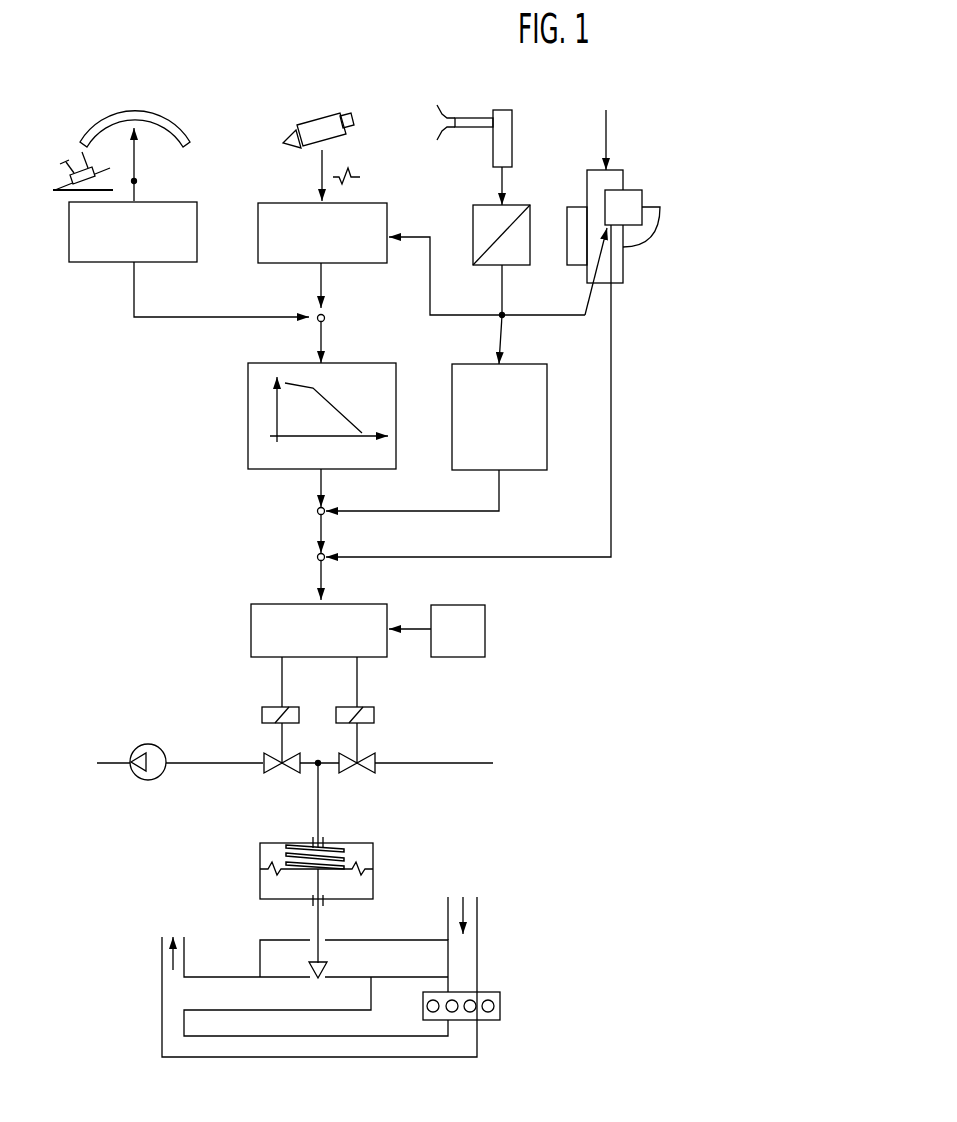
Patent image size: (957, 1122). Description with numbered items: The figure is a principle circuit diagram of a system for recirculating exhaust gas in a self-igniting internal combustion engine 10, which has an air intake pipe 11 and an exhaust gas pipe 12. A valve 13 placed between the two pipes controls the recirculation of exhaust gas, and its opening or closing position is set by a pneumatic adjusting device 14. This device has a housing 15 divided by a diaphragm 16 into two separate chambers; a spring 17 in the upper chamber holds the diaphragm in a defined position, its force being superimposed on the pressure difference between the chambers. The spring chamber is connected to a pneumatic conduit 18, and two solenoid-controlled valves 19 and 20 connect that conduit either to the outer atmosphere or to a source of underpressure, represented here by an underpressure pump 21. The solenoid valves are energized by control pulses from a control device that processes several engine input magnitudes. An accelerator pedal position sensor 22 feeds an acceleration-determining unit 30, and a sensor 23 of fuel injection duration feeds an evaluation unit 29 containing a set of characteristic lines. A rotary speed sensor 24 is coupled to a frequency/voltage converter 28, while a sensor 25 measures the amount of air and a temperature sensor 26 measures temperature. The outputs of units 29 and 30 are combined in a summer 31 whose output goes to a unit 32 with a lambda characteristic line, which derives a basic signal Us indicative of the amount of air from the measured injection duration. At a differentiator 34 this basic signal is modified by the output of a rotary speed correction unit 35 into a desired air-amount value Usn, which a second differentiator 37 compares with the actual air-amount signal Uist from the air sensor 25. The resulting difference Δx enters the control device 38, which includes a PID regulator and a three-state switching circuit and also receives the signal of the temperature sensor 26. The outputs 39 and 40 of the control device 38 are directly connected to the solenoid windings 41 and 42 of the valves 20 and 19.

The internal combustion engine 10 is at (495, 1003).
The air intake pipe 11 is at (478, 930).
The exhaust gas pipe 12 is at (162, 975).
The valve 13 is at (326, 965).
The pneumatic adjusting device 14 is at (376, 866).
The housing 15 is at (373, 885).
The diaphragm 16 is at (284, 871).
The spring 17 is at (288, 853).
The pneumatic conduit 18 is at (318, 810).
The solenoid-controlled valve 19 is at (371, 770).
The solenoid-controlled valve 20 is at (264, 770).
The underpressure pump 21 is at (148, 744).
The accelerator pedal position sensor 22 is at (135, 164).
The fuel injection duration sensor 23 is at (317, 150).
The rotary speed sensor 24 is at (492, 150).
The air amount sensor 25 is at (623, 186).
The temperature sensor 26 is at (485, 645).
The frequency/voltage converter 28 is at (526, 206).
The evaluation unit 29 is at (372, 203).
The acceleration-determining unit 30 is at (163, 263).
The summer 31 is at (325, 320).
The lambda characteristic line unit 32 is at (396, 364).
The differentiator 34 is at (316, 511).
The rotary speed correction unit 35 is at (538, 470).
The differentiator 37 is at (316, 557).
The control device 38 is at (251, 624).
The output 39 is at (281, 673).
The output 40 is at (358, 673).
The solenoid winding 41 is at (262, 717).
The solenoid winding 42 is at (374, 717).